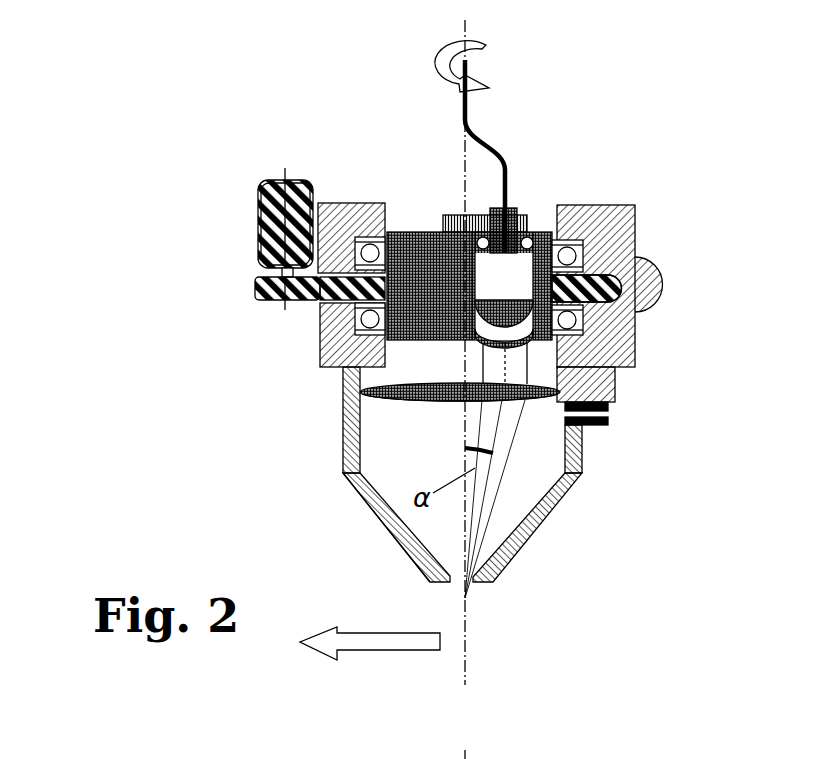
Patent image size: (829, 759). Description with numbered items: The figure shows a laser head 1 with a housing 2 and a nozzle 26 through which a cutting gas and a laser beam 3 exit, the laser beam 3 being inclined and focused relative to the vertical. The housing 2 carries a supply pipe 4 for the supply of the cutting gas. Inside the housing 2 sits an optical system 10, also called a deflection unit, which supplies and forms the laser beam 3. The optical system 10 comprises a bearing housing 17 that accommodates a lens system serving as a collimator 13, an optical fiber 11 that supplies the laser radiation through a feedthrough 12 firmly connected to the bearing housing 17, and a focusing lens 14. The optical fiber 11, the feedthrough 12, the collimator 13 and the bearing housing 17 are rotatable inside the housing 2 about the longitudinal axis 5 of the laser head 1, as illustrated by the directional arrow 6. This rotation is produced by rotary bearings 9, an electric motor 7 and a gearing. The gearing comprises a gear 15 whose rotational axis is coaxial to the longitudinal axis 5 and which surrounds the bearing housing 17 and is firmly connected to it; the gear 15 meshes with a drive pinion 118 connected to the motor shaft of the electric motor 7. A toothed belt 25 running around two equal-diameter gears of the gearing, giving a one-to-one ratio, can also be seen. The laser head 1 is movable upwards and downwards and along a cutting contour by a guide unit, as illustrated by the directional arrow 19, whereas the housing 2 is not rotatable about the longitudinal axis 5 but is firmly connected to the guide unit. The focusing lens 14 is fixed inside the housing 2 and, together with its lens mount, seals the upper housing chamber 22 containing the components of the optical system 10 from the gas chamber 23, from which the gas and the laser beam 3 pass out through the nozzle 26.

The laser head 1 is at (338, 513).
The housing 2 is at (624, 292).
The laser beam 3 is at (482, 483).
The supply pipe 4 is at (603, 411).
The longitudinal axis 5 is at (463, 648).
The directional arrow 6 is at (440, 50).
The electric motor 7 is at (267, 182).
The rotary bearings 9 is at (357, 203).
The optical system 10 is at (536, 425).
The optical fiber 11 is at (487, 145).
The feedthrough 12 is at (535, 193).
The collimator 13 is at (475, 318).
The focusing lens 14 is at (408, 388).
The gear 15 is at (612, 257).
The bearing housing 17 is at (430, 232).
The directional arrow 19 is at (367, 652).
The upper housing chamber 22 is at (427, 381).
The gas chamber 23 is at (427, 433).
The toothed belt 25 is at (450, 213).
The nozzle 26 is at (402, 545).
The drive pinion 118 is at (267, 301).